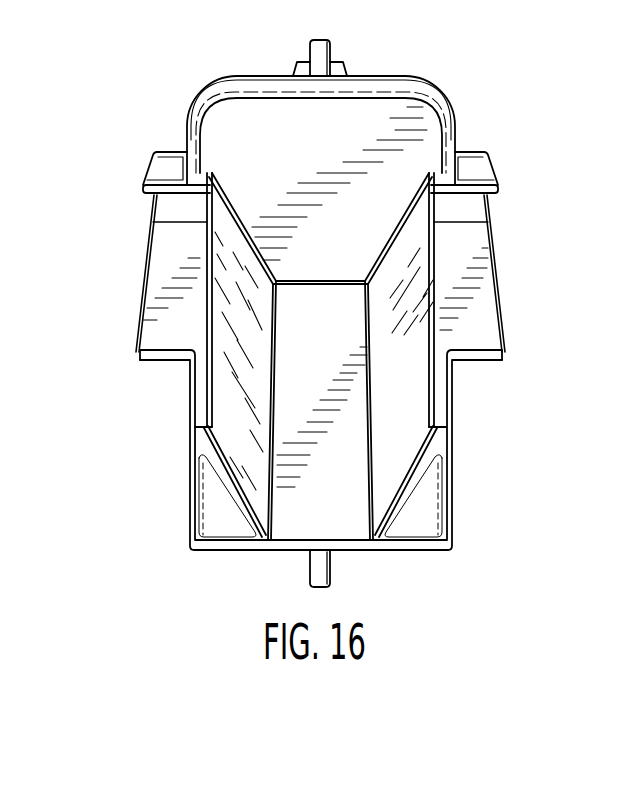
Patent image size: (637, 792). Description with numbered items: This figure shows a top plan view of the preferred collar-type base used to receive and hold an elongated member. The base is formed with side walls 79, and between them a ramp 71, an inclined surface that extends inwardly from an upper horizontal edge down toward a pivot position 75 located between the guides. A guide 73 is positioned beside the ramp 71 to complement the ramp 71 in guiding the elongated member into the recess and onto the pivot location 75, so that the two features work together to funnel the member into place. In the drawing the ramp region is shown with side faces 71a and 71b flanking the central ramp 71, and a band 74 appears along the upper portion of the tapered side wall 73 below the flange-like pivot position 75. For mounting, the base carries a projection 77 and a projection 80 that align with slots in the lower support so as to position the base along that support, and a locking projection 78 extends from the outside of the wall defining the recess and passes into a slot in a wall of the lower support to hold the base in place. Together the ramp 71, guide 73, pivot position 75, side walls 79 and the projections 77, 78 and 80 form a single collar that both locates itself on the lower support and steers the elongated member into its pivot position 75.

The ramp 71 is at (302, 493).
The right sloped side wall of funnel insert 71a is at (407, 412).
The left sloped side wall of funnel insert 71b is at (225, 409).
The guide 73 is at (163, 310).
The upper rim band of housing 74 is at (131, 228).
The pivot position 75 is at (176, 210).
The projection 77 is at (321, 52).
The locking projection 78 is at (301, 62).
The side wall 79 is at (194, 452).
The projection 80 is at (331, 568).